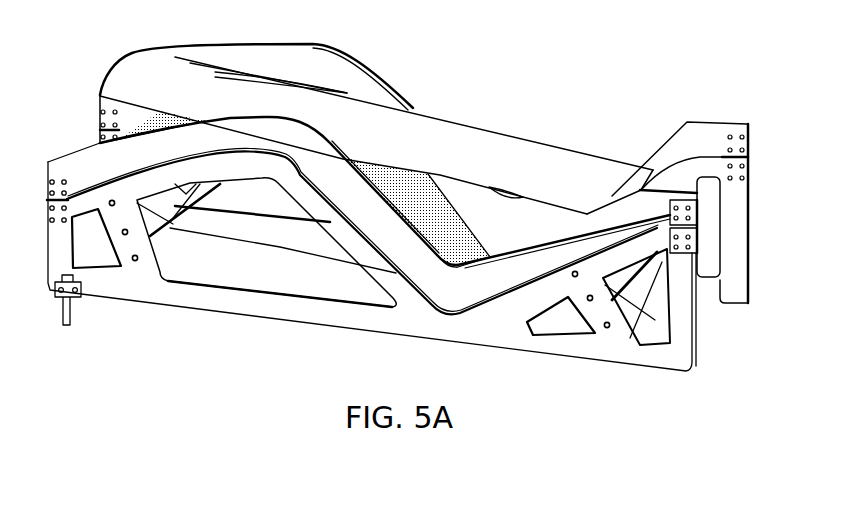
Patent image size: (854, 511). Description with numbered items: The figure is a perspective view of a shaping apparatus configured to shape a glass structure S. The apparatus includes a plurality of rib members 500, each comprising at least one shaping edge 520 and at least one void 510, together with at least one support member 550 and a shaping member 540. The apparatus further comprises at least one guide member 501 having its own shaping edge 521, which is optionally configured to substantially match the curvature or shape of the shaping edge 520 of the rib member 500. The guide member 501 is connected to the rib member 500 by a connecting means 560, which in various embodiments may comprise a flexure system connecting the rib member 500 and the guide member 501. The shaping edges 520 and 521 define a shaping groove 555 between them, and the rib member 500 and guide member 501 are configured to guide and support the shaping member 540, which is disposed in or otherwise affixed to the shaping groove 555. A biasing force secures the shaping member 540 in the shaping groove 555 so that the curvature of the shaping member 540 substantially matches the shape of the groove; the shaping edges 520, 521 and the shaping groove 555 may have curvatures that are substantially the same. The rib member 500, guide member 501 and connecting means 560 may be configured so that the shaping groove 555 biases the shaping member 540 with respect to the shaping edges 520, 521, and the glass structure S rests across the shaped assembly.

The glass structure S is at (500, 140).
The rib member 500 is at (307, 243).
The guide member 501 is at (692, 135).
The void 510 is at (564, 340).
The shaping edge 520 is at (395, 300).
The shaping edge 521 is at (534, 268).
The shaping member 540 is at (467, 265).
The support member 550 is at (163, 234).
The shaping groove 555 is at (142, 165).
The connecting means 560 is at (682, 256).